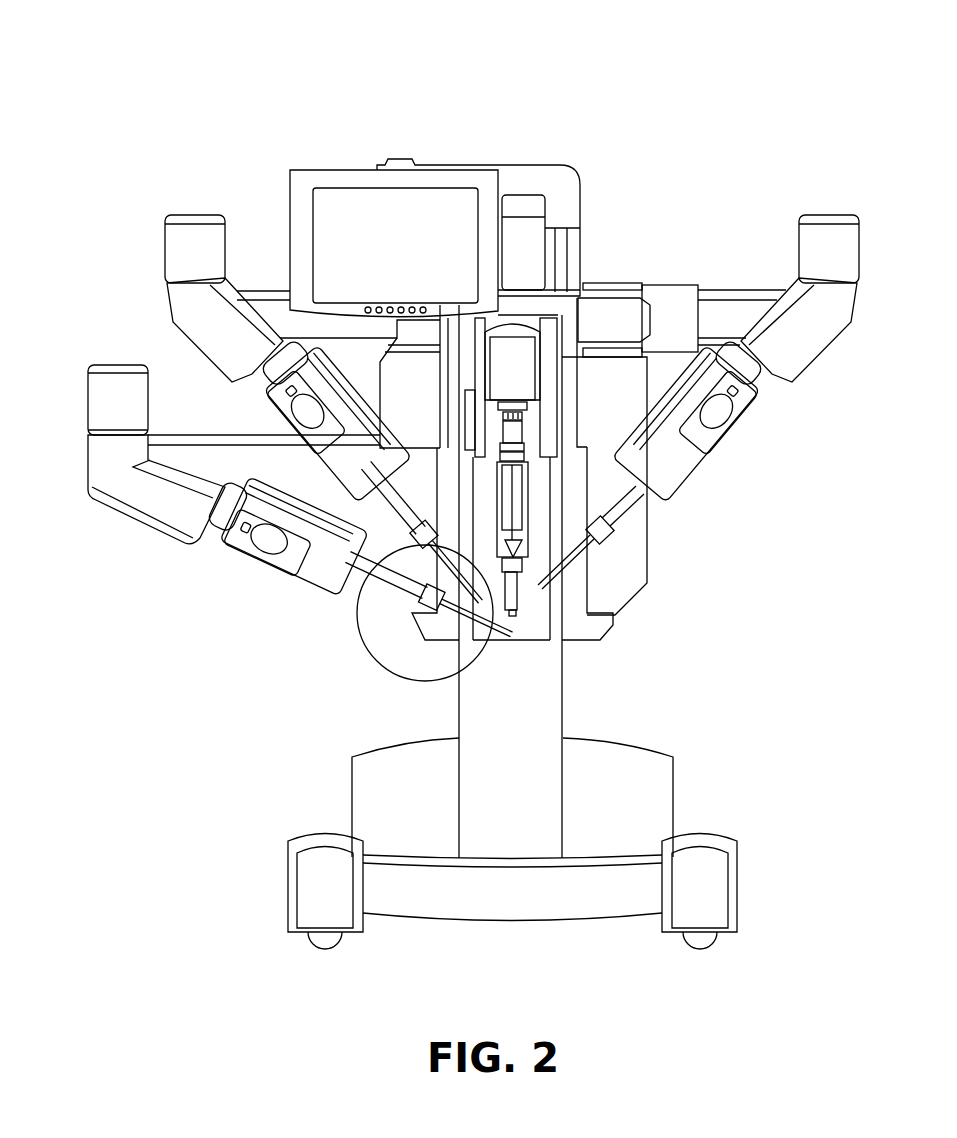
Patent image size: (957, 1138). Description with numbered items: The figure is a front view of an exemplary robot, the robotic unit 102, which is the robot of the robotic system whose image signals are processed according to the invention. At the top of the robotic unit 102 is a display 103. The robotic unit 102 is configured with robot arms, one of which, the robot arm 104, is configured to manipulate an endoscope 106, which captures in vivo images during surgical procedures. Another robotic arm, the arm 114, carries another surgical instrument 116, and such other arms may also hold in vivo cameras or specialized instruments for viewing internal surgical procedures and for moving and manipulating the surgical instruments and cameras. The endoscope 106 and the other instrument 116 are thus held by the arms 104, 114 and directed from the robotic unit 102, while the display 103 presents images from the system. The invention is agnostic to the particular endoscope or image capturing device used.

The robotic unit 102 is at (612, 113).
The display 103 is at (363, 218).
The robot arm 104 is at (80, 468).
The endoscope 106 is at (360, 643).
The robot arm 114 is at (850, 328).
The surgical instrument 116 is at (610, 540).